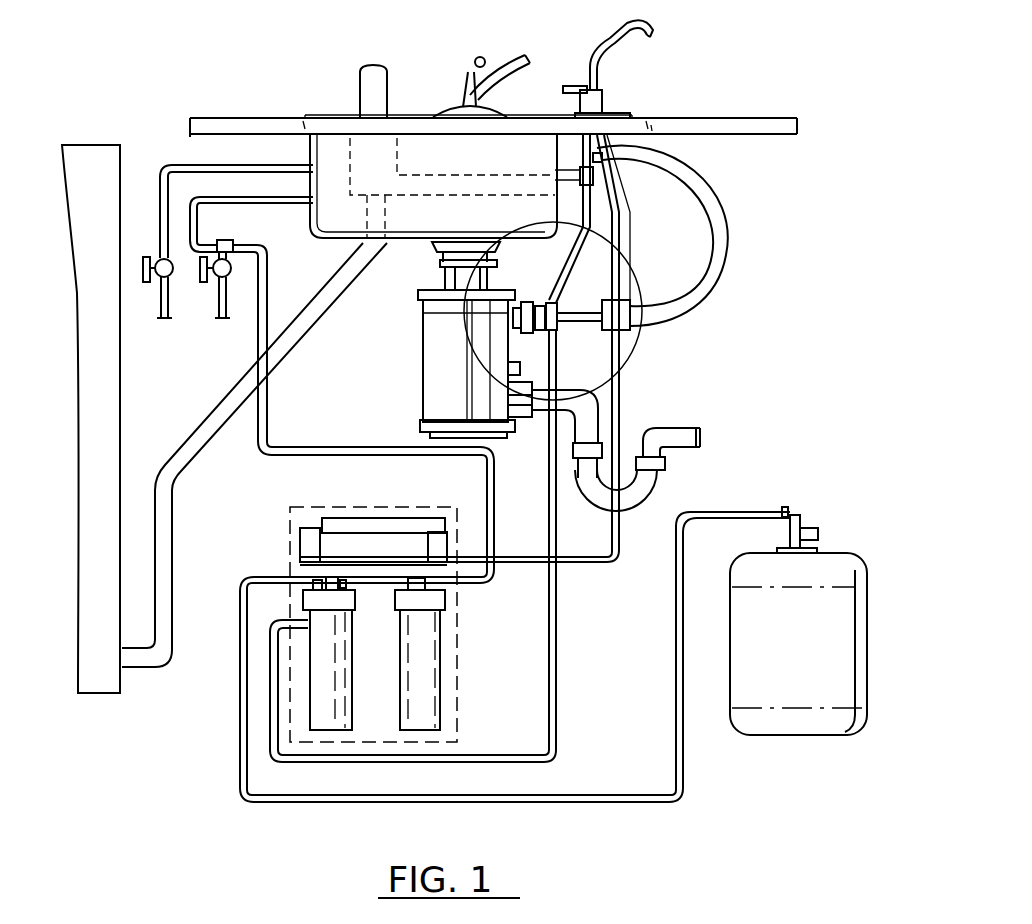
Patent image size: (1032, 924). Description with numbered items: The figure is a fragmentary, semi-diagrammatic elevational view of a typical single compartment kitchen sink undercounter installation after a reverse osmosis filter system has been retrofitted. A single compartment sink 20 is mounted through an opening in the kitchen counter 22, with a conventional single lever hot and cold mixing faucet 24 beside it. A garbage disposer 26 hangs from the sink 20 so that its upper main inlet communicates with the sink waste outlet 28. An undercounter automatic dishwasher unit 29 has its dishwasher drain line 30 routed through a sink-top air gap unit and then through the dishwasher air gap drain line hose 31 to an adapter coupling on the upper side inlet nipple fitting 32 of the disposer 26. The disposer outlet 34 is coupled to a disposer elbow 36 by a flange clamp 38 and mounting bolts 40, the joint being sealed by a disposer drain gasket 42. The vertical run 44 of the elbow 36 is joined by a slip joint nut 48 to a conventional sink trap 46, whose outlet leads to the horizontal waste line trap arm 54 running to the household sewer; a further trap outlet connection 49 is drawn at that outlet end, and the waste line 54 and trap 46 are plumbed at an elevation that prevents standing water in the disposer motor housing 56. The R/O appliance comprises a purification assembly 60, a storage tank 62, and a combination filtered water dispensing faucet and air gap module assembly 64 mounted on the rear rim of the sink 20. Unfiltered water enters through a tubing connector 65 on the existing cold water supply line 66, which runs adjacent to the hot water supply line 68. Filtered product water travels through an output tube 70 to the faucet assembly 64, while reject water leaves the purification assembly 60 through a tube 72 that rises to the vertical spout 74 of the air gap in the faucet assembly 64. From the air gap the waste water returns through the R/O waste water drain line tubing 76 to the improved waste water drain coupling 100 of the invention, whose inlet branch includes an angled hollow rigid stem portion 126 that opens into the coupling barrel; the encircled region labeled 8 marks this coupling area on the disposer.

The detail circle 8 is at (634, 356).
The single compartment sink 20 is at (375, 250).
The kitchen counter 22 is at (229, 117).
The water dispensing faucet 24 is at (461, 80).
The garbage disposer 26 is at (416, 327).
The sink waste outlet 28 is at (465, 243).
The automatic dishwasher unit 29 is at (127, 160).
The dishwasher drain line 30 is at (172, 464).
The dishwasher air gap drain line hose 31 is at (733, 222).
The upper side inlet nipple fitting 32 is at (524, 297).
The disposer outlet 34 is at (510, 408).
The disposer elbow 36 is at (618, 398).
The flange clamp 38 is at (523, 418).
The mounting bolts 40 is at (510, 370).
The disposer drain gasket 42 is at (512, 395).
The vertical run of elbow 44 is at (603, 432).
The sink trap 46 is at (670, 489).
The slip joint nut 48 is at (580, 450).
The trap outlet 49 is at (667, 455).
The horizontal waste line trap arm 54 is at (705, 420).
The disposer motor housing 56 is at (467, 440).
The purification assembly 60 is at (282, 535).
The storage tank 62 is at (875, 598).
The filtered water dispensing faucet and air gap module assembly 64 is at (612, 96).
The tubing connector 65 is at (255, 410).
The cold water supply line 66 is at (224, 310).
The hot water supply line 68 is at (165, 310).
The output tube 70 is at (560, 648).
The tube 72 is at (622, 557).
The vertical spout 74 is at (602, 162).
The R/O waste water drain line tubing 76 is at (636, 204).
The waste water drain coupling 100 is at (580, 333).
The stem portion 126 is at (638, 289).